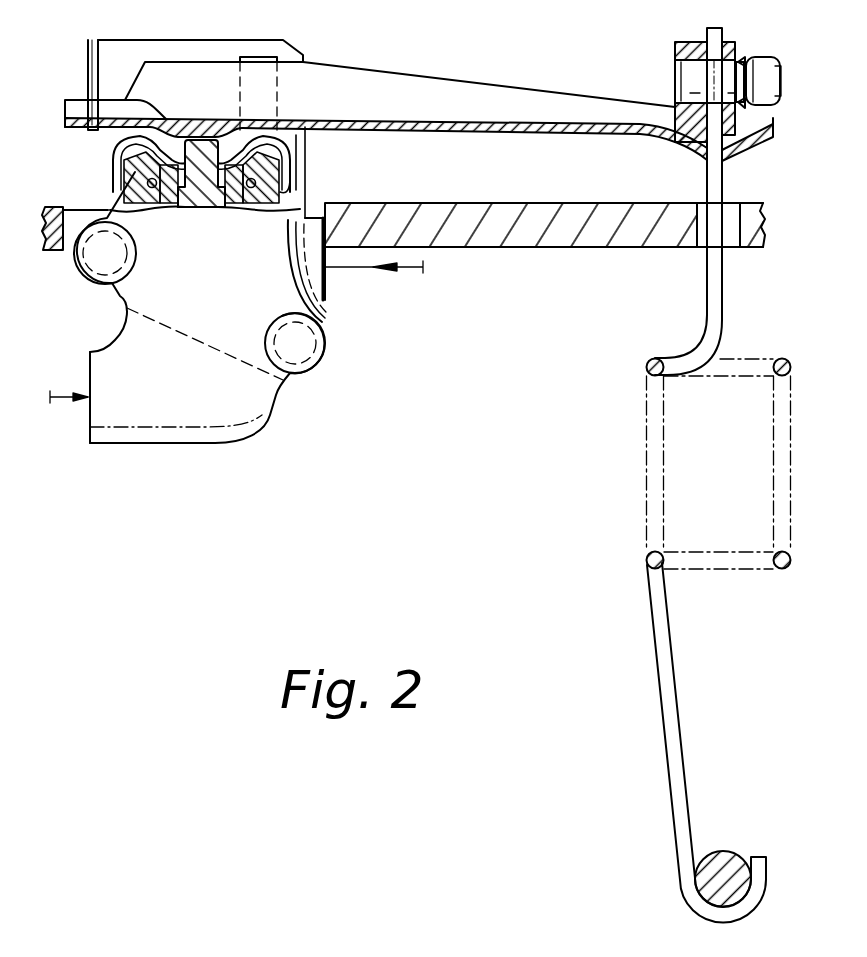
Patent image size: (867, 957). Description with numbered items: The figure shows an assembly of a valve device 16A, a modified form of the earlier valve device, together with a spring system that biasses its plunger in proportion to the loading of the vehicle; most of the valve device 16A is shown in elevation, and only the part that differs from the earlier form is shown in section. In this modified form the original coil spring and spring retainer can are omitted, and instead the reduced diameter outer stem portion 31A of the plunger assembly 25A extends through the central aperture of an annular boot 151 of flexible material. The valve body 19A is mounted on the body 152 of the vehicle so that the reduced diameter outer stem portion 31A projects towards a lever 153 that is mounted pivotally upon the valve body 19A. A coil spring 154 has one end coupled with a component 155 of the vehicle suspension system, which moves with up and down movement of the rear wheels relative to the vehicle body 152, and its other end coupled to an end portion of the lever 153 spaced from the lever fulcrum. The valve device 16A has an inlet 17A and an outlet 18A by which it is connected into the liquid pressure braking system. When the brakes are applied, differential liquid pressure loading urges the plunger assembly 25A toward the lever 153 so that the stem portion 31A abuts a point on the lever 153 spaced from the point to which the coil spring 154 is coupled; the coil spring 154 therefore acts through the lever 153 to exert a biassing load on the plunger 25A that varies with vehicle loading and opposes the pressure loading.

The valve device 16A is at (183, 390).
The inlet 17A is at (327, 270).
The outlet 18A is at (88, 405).
The valve body 19A is at (279, 197).
The plunger assembly 25A is at (203, 205).
The reduced diameter outer stem portion 31A is at (203, 147).
The annular boot 151 is at (292, 163).
The body of the vehicle 152 is at (567, 232).
The lever 153 is at (481, 96).
The coil spring 154 is at (650, 472).
The component of the vehicle suspension system 155 is at (728, 862).